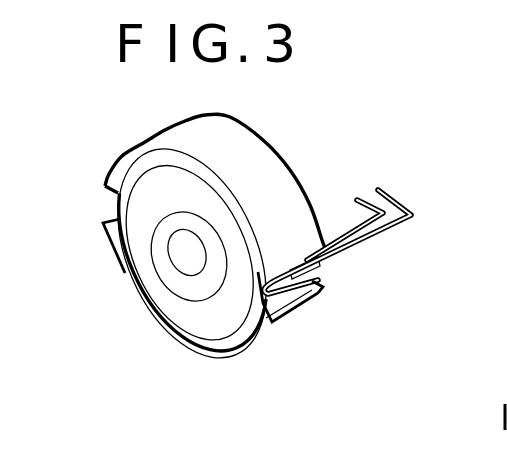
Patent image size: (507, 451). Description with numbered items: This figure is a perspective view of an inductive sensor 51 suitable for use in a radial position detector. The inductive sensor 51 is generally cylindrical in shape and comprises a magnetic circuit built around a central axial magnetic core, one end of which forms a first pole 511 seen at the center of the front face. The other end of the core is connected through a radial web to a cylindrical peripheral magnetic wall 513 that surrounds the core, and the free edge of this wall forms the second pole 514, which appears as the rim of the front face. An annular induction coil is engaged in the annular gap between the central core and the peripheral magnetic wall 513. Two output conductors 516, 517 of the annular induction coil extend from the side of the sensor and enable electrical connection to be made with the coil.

The inductive sensor 51 is at (134, 126).
The first pole 511 is at (166, 265).
The cylindrical peripheral magnetic wall 513 is at (250, 158).
The second pole 514 is at (199, 343).
The output conductor 516 is at (381, 243).
The output conductor 517 is at (355, 222).